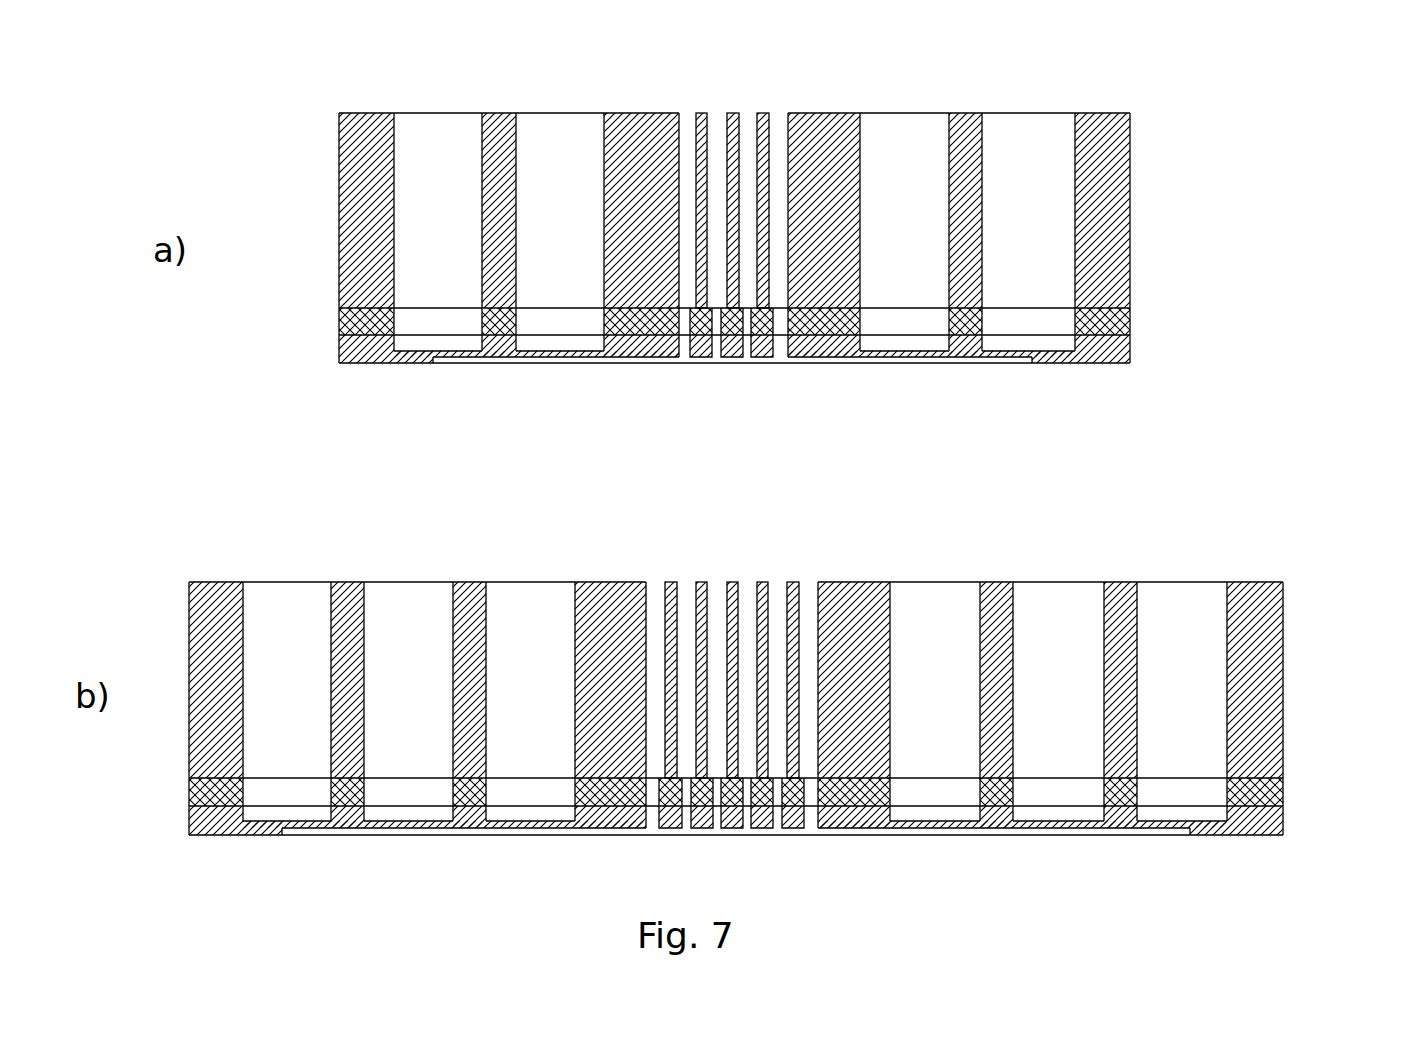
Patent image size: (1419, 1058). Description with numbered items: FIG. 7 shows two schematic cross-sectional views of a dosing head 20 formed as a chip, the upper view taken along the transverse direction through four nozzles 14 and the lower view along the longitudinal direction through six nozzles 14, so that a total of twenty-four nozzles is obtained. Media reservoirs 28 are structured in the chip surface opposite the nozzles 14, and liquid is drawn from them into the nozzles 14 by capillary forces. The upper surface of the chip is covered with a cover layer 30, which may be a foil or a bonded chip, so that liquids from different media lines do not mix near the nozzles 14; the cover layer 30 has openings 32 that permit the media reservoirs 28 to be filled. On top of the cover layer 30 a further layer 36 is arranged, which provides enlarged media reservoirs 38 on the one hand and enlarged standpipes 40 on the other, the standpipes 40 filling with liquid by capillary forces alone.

The nozzles 14 is at (686, 363).
The dosing head 20 is at (1130, 362).
The media reservoirs 28 is at (1027, 343).
The cover layer 30 is at (1130, 316).
The openings 32 is at (993, 320).
The further layer 36 is at (1130, 205).
The enlarged media reservoirs 38 is at (902, 138).
The enlarged standpipes 40 is at (777, 108).